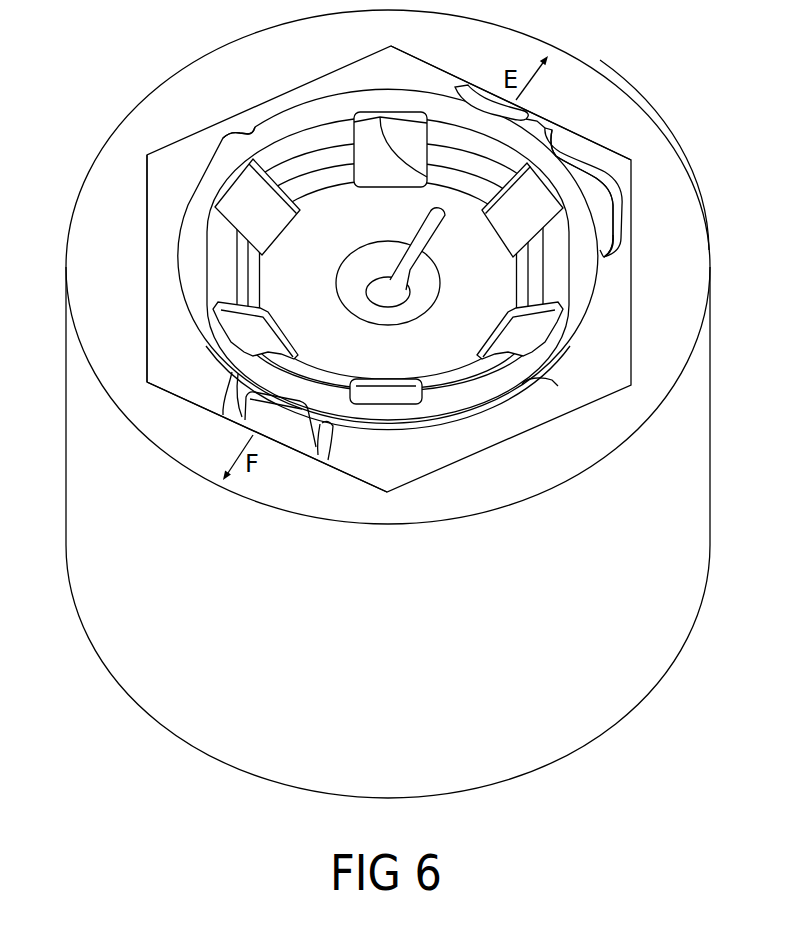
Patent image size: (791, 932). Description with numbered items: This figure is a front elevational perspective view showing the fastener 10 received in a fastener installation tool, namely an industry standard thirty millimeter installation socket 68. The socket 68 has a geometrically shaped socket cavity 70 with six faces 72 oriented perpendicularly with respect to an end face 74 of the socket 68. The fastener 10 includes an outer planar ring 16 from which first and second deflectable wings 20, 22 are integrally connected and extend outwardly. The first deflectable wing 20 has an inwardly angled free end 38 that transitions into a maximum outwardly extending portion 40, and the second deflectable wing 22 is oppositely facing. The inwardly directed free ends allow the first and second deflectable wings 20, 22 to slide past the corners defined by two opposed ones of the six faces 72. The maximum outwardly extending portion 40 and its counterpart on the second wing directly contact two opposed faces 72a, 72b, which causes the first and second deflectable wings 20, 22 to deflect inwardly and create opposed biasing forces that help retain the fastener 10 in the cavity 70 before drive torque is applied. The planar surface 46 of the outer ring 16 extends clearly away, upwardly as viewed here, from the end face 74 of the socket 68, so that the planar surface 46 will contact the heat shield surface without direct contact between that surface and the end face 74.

The fastener 10 is at (602, 295).
The outer planar ring 16 is at (193, 257).
The first deflectable wing 20 is at (622, 155).
The second deflectable wing 22 is at (318, 450).
The free end 38 is at (610, 258).
The maximum outwardly extending portion 40 is at (618, 230).
The planar surface 46 is at (257, 132).
The installation socket 68 is at (399, 656).
The socket cavity 70 is at (172, 343).
The faces 72 is at (160, 155).
The opposed face 72a is at (575, 146).
The opposed face 72b is at (172, 396).
The end face 74 is at (684, 222).